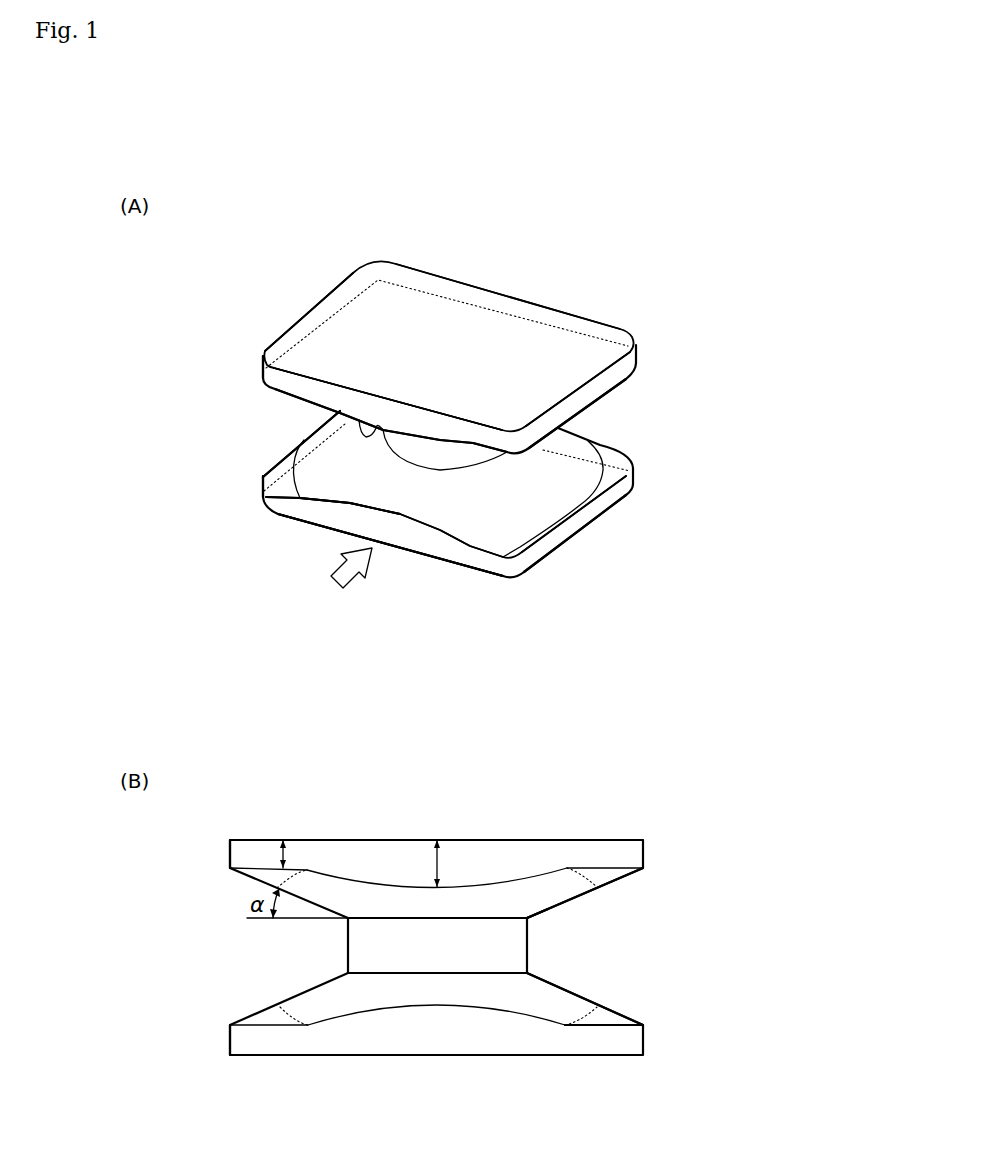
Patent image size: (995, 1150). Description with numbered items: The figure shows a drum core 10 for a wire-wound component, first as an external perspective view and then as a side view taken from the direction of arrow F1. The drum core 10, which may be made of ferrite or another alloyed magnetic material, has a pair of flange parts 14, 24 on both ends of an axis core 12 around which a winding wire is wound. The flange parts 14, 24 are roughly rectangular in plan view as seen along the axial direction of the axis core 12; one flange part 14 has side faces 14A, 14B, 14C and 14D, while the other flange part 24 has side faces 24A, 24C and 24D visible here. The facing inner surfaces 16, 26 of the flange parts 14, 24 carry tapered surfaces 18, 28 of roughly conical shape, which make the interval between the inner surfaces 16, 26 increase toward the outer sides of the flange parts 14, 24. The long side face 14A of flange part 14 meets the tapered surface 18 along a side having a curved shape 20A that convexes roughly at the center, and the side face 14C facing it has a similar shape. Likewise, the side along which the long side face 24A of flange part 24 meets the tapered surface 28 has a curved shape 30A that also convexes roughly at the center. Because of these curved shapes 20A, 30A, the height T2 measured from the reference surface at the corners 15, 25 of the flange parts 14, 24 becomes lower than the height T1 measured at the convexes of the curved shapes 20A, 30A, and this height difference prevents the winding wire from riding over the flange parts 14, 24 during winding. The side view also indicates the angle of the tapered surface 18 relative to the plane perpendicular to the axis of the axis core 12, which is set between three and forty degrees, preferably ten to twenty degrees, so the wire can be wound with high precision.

The drum core 10 is at (669, 251).
The axis core 12 is at (473, 460).
The flange part 14 is at (491, 263).
The side face 14A is at (287, 383).
The side face 14B is at (525, 310).
The side face 14C is at (615, 372).
The side face 14D is at (313, 318).
The corner 15 is at (260, 367).
The inner surface 16 is at (612, 877).
The tapered surface 18 is at (568, 893).
The curved shape 20A is at (359, 420).
The flange part 24 is at (473, 588).
The side face 24A is at (347, 513).
The side face 24C is at (617, 495).
The side face 24D is at (280, 468).
The corner 25 is at (260, 490).
The inner surface 26 is at (612, 1013).
The tapered surface 28 is at (563, 997).
The curved shape 30A is at (363, 500).
The height T1 is at (451, 863).
The height T2 is at (285, 855).
The arrow F1 is at (345, 579).